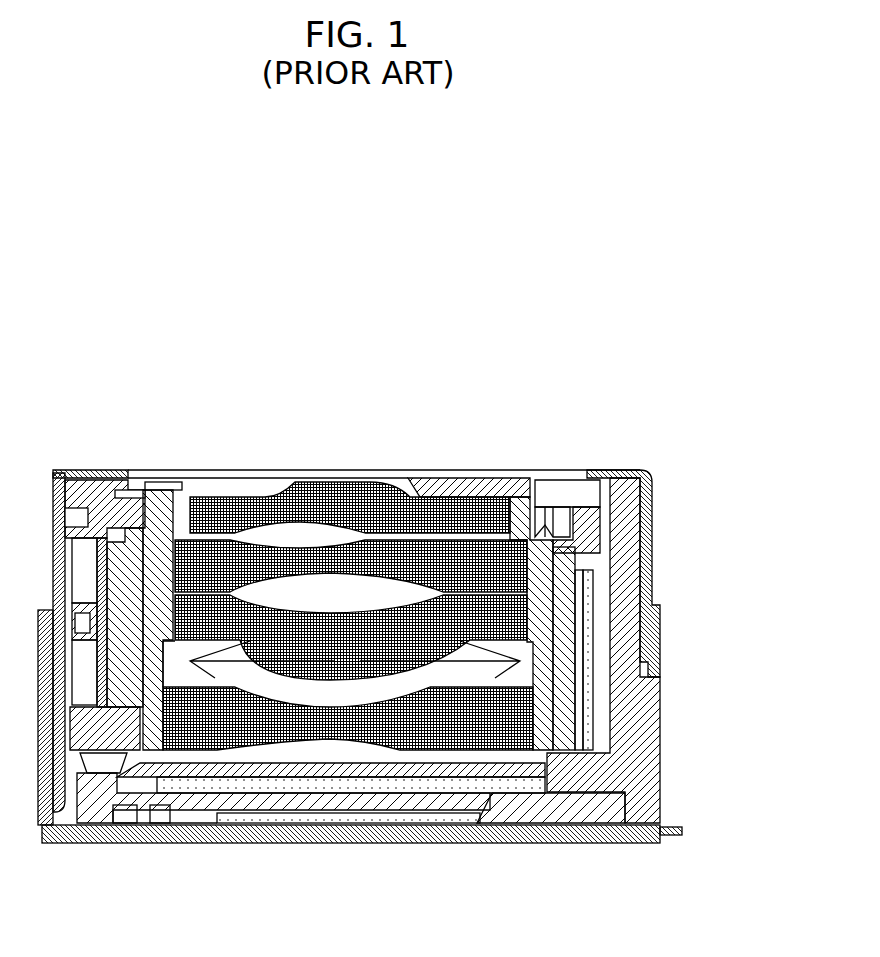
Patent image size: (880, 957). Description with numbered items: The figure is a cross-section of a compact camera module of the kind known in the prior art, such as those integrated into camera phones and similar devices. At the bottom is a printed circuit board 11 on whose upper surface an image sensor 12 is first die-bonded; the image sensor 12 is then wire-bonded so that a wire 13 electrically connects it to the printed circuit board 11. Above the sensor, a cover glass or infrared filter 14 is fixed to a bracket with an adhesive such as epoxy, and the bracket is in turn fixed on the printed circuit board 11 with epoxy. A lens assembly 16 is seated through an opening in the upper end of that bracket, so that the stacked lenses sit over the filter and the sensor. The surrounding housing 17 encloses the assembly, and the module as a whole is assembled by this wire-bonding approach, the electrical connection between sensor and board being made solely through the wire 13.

The printed circuit board 11 is at (450, 832).
The image sensor 12 is at (388, 829).
The wire 13 is at (197, 837).
The infrared filter 14 is at (523, 787).
The lens assembly 16 is at (535, 483).
The housing 17 is at (637, 713).